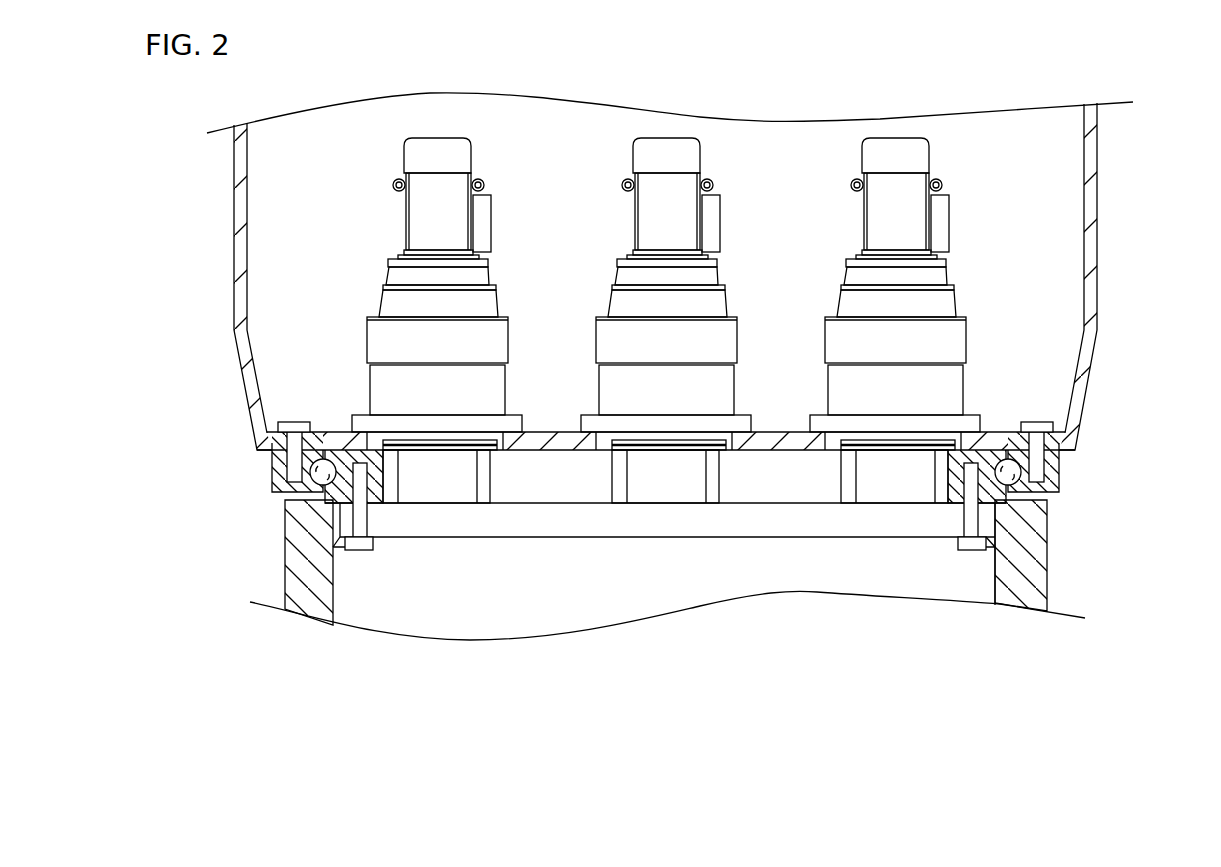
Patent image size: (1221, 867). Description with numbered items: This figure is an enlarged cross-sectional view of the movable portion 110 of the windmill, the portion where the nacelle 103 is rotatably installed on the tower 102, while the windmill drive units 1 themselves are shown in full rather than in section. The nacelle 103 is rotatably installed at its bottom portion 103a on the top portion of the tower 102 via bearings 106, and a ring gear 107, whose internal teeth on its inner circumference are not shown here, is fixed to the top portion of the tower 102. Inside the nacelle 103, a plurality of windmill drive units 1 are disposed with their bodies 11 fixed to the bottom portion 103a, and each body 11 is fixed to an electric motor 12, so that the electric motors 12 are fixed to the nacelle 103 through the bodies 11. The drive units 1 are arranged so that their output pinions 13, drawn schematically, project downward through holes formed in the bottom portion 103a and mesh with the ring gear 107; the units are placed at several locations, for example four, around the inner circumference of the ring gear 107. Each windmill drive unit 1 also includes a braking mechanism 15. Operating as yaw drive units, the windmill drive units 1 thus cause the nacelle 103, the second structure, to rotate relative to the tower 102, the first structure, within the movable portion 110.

The windmill drive unit 1 is at (658, 284).
The body 11 is at (390, 341).
The electric motor 12 is at (452, 223).
The pinion 13 is at (438, 487).
The braking mechanism 15 is at (417, 152).
The tower 102 is at (1022, 592).
The nacelle 103 is at (1110, 232).
The bottom portion 103a is at (1003, 430).
The bearing 106 is at (316, 485).
The ring gear 107 is at (545, 487).
The movable portion 110 is at (1114, 459).